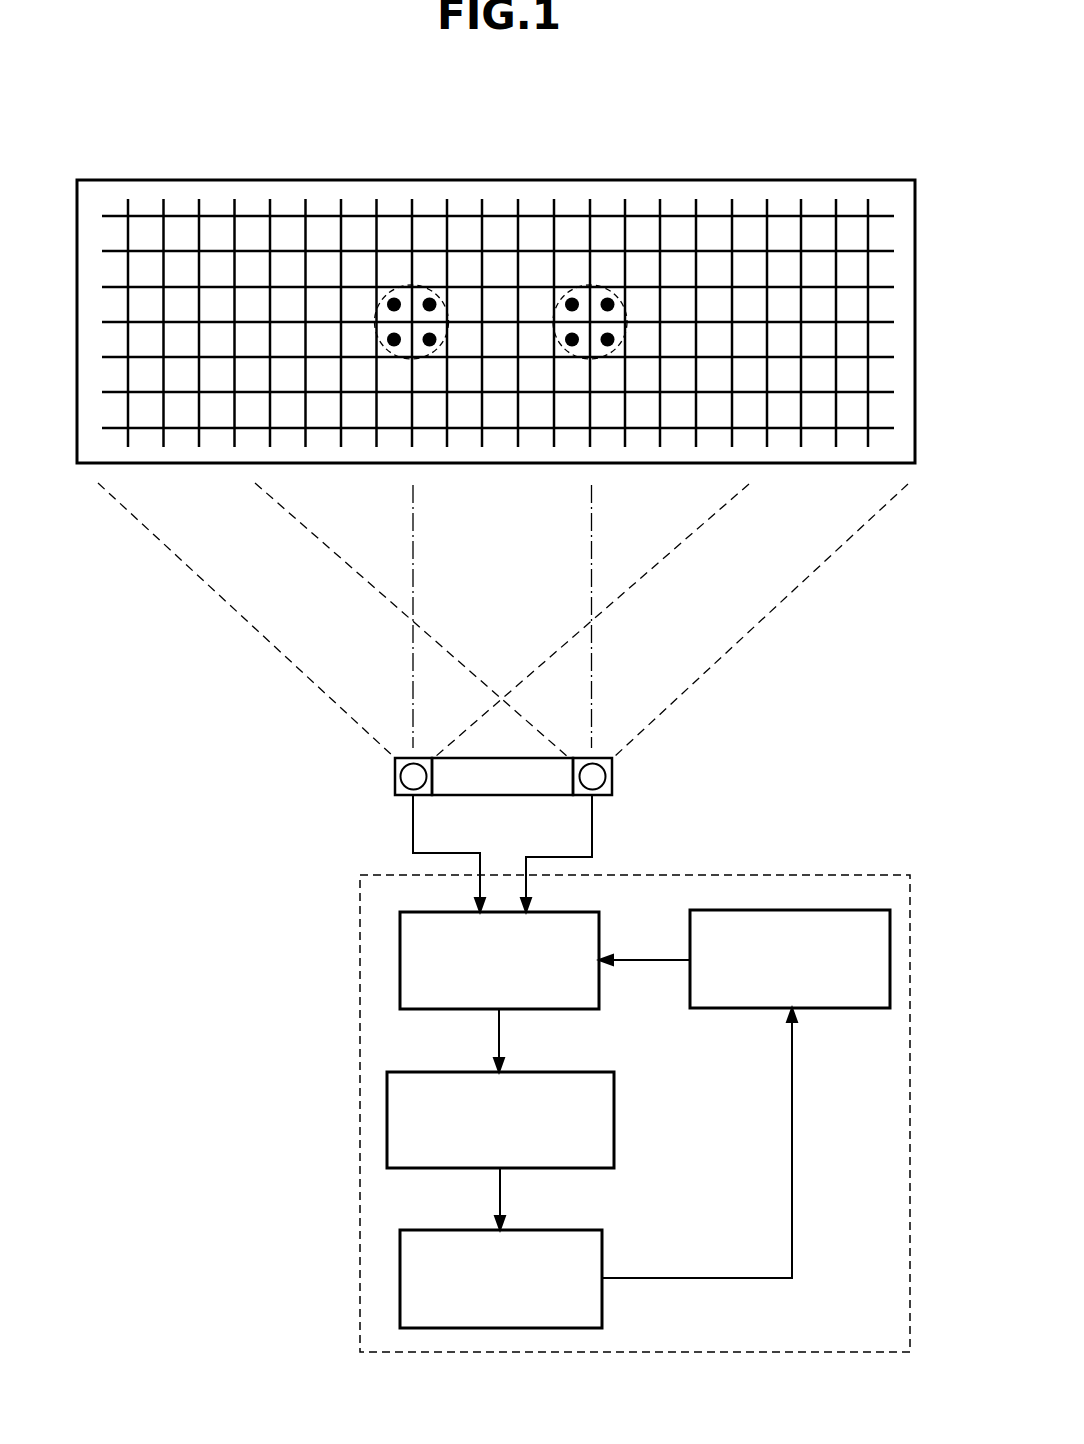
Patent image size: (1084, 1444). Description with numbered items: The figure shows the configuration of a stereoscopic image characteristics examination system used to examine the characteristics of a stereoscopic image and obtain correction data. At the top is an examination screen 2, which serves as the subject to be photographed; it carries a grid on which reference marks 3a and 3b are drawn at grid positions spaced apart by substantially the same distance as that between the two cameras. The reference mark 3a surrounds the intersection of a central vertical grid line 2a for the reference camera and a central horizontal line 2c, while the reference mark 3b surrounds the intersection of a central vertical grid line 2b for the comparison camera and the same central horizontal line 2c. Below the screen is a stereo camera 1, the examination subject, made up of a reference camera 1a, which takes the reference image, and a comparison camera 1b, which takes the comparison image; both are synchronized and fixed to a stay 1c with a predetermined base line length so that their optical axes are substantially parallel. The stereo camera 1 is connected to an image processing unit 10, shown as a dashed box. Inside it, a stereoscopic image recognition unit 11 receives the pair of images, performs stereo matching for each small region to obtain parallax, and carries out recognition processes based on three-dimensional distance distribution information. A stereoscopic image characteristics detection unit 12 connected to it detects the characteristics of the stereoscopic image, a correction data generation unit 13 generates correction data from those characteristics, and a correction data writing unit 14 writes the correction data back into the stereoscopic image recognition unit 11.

The stereo camera 1 is at (510, 782).
The reference camera 1a is at (612, 776).
The comparison camera 1b is at (395, 775).
The stay 1c is at (503, 797).
The examination screen 2 is at (496, 312).
The central vertical grid line 2a is at (591, 199).
The central vertical grid line 2b is at (406, 199).
The central horizontal line 2c is at (848, 318).
The reference mark 3a is at (605, 372).
The reference mark 3b is at (399, 372).
The image processing unit 10 is at (349, 1024).
The stereoscopic image recognition unit 11 is at (563, 1010).
The stereoscopic image characteristics detection unit 12 is at (614, 1118).
The correction data generation unit 13 is at (603, 1252).
The correction data writing unit 14 is at (832, 1008).